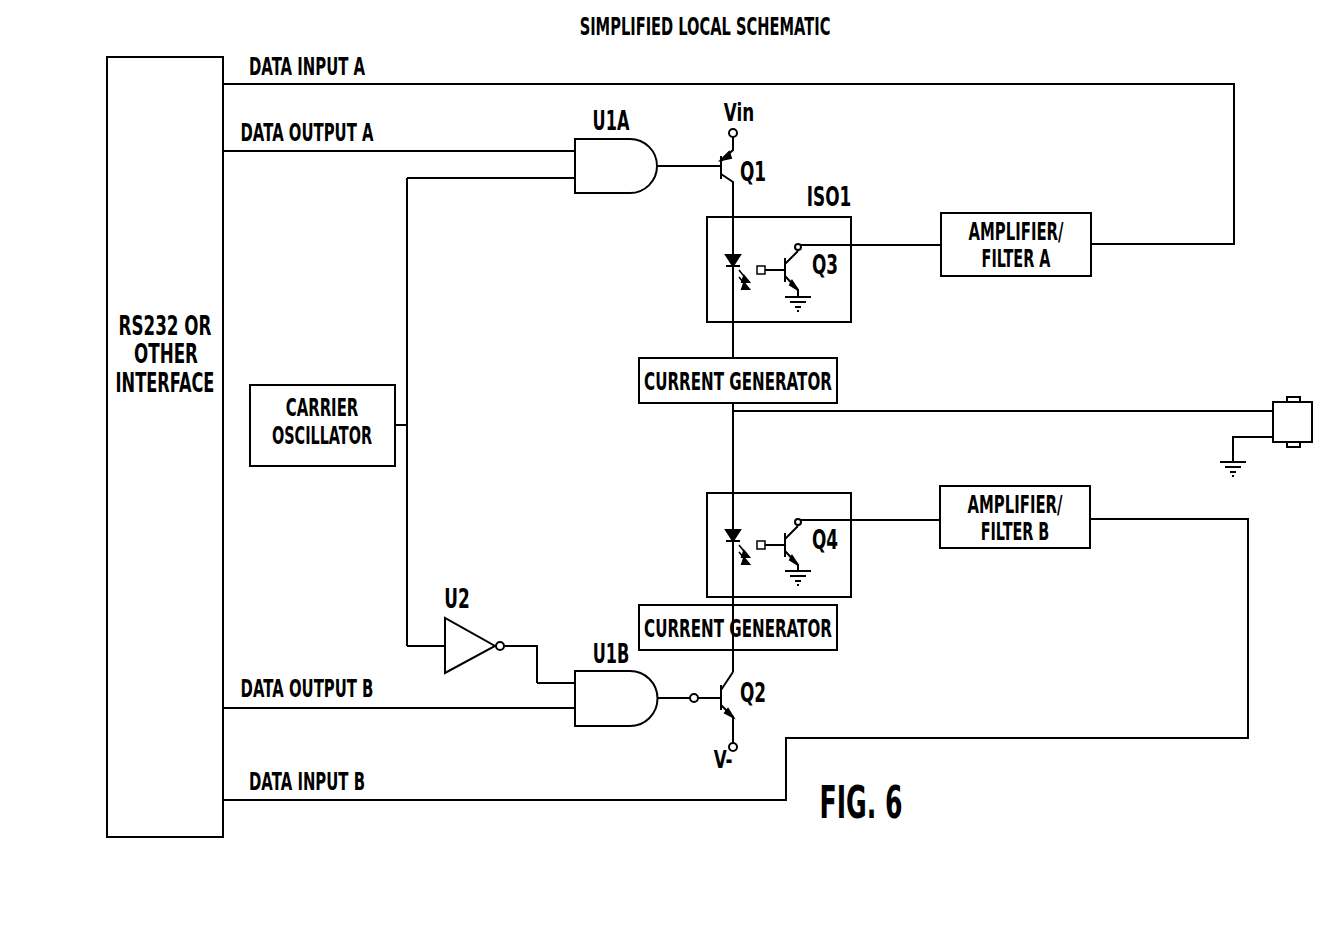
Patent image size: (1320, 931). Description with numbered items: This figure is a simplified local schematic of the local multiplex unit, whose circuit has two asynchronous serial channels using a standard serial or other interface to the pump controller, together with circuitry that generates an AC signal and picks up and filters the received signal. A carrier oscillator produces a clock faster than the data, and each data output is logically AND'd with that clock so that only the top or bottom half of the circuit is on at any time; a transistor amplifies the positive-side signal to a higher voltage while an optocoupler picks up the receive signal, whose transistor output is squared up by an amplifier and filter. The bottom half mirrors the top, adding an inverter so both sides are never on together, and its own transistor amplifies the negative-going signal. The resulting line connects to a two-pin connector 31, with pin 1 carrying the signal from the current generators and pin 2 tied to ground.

The connector 31 is at (1022, 420).
The connector pin 1 is at (1003, 398).
The connector pin 2 is at (1246, 444).